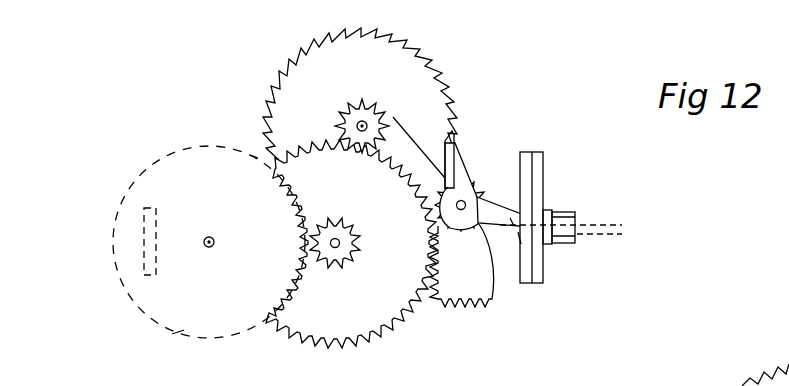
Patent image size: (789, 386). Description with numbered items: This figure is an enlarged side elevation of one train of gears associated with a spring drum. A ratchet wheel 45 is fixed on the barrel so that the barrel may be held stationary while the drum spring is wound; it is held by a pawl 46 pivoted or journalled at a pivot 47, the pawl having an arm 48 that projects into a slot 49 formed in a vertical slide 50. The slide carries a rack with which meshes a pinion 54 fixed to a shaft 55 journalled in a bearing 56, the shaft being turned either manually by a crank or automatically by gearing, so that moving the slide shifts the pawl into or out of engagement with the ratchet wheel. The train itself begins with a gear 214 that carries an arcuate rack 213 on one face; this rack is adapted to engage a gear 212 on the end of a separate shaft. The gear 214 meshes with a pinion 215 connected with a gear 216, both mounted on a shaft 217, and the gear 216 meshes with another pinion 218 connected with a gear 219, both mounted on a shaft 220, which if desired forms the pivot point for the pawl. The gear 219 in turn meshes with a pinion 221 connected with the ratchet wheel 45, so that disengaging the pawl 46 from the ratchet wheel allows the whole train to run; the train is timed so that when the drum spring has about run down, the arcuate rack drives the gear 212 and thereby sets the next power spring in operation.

The ratchet wheel 45 is at (414, 67).
The pawl 46 is at (456, 150).
The pivot 47 is at (476, 190).
The arm 48 is at (513, 221).
The slot 49 is at (522, 238).
The vertical slide 50 is at (531, 153).
The pinion 54 is at (549, 212).
The shaft 55 is at (597, 229).
The bearing 56 is at (568, 244).
The gear 212 is at (126, 238).
The arcuate rack 213 is at (136, 256).
The gear 214 is at (179, 331).
The pinion 215 is at (341, 268).
The gear 216 is at (307, 331).
The shaft 217 is at (339, 248).
The pinion 218 is at (459, 231).
The gear 219 is at (478, 303).
The shaft 220 is at (454, 206).
The pinion 221 is at (365, 102).